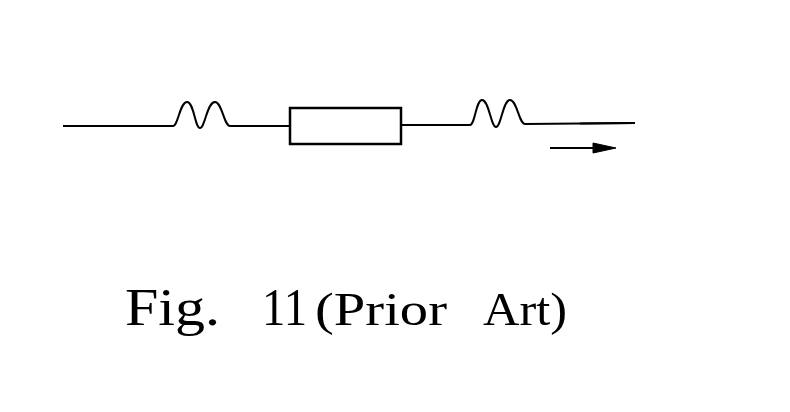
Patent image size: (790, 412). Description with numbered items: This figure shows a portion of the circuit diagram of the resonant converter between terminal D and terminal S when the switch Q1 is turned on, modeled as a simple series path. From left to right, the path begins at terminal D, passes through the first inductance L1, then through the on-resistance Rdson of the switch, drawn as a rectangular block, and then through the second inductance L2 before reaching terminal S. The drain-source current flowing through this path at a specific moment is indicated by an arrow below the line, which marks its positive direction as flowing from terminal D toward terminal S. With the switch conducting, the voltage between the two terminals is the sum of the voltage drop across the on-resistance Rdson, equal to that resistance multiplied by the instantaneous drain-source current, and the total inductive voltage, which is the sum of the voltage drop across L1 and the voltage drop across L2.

The terminal D is at (95, 105).
The inductance L1 is at (201, 93).
The on-resistance Rdson is at (345, 149).
The inductance L2 is at (497, 92).
The terminal S is at (607, 103).